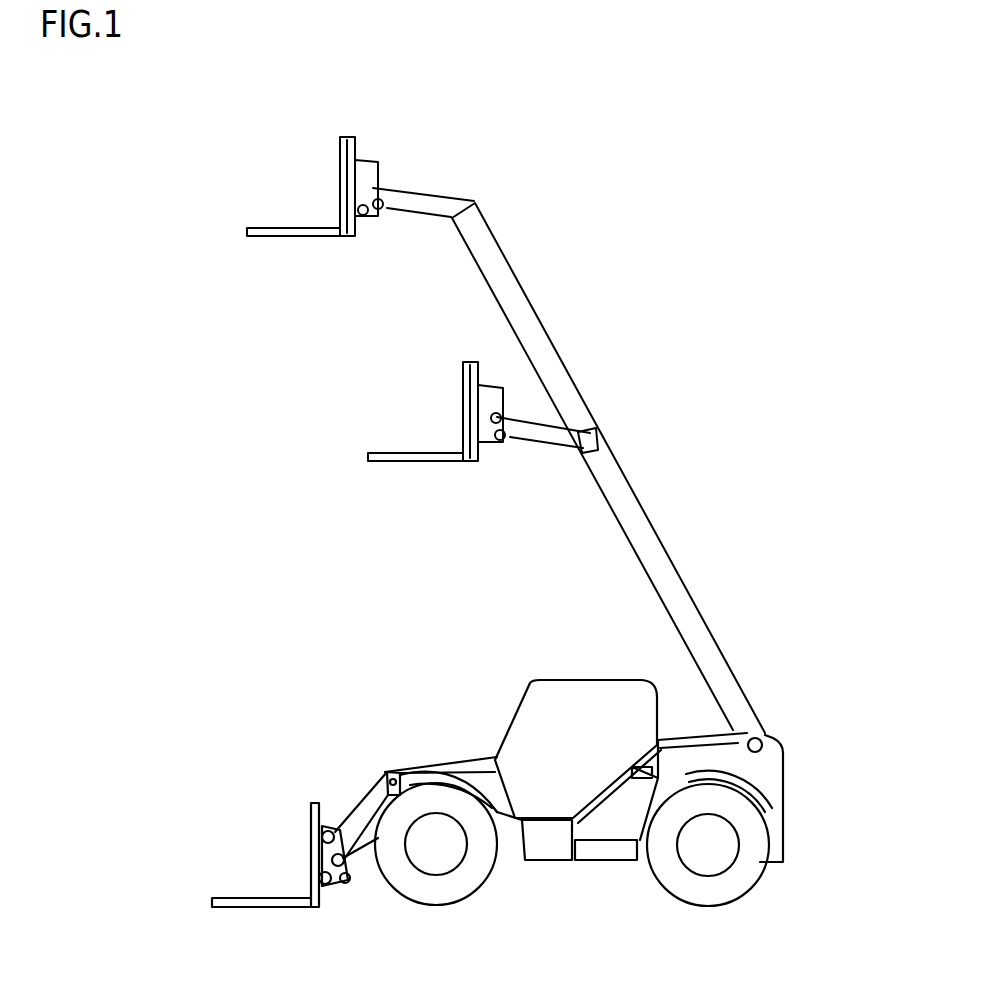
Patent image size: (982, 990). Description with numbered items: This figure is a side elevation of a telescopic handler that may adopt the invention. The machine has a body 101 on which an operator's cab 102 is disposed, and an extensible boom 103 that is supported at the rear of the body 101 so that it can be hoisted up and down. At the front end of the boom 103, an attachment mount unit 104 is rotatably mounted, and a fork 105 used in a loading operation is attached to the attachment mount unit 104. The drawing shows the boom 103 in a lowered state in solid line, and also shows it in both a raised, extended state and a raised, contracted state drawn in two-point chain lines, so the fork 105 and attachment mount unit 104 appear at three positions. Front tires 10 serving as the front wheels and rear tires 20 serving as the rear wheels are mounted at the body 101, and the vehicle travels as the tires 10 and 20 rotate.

The front tires 10 is at (485, 867).
The rear tires 20 is at (752, 870).
The body 101 is at (780, 788).
The operator's cab 102 is at (579, 697).
The extensible boom 103 is at (457, 765).
The attachment mount unit 104 is at (323, 828).
The fork 105 is at (303, 867).